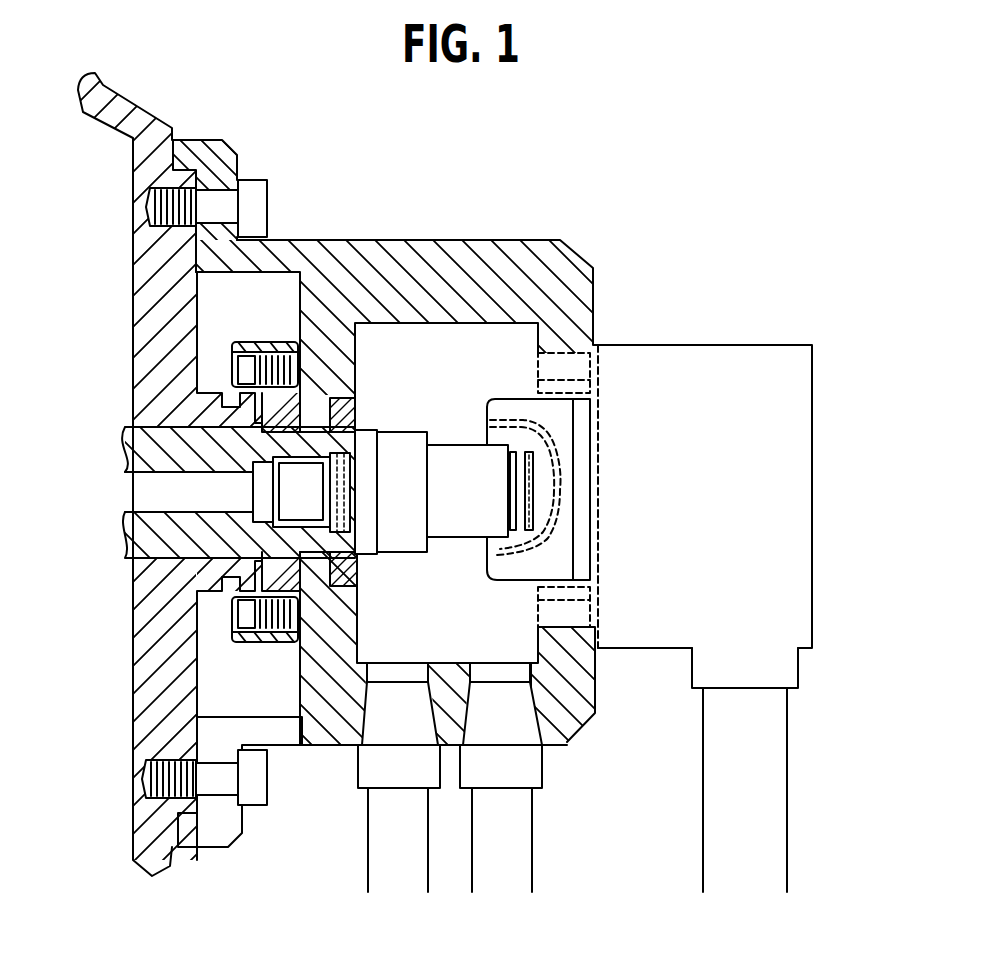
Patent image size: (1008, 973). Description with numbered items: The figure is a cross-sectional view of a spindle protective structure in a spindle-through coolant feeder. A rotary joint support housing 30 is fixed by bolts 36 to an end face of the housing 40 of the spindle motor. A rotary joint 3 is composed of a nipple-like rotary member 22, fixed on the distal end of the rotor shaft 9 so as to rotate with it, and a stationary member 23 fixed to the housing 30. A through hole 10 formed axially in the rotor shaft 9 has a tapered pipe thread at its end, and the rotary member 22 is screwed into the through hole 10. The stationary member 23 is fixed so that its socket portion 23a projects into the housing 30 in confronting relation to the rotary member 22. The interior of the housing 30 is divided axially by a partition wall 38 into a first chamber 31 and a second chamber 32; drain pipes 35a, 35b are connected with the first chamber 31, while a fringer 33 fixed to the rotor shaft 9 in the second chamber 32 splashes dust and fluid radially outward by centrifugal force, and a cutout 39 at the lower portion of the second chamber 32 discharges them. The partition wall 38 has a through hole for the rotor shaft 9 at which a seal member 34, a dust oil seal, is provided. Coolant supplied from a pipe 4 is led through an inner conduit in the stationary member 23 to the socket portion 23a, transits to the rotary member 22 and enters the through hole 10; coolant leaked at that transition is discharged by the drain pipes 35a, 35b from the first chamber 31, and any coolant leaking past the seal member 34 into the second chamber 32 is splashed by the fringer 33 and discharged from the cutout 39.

The rotary joint 3 is at (831, 383).
The pipe 4 is at (797, 812).
The rotor shaft 9 is at (140, 456).
The through hole 10 is at (133, 502).
The rotary member 22 is at (460, 430).
The stationary member 23 is at (806, 603).
The socket portion 23a is at (516, 588).
The rotary joint support housing 30 is at (517, 240).
The first chamber 31 is at (430, 347).
The second chamber 32 is at (240, 287).
The fringer 33 is at (272, 340).
The seal member 34 is at (340, 357).
The drain pipe 35a is at (368, 862).
The drain pipe 35b is at (532, 862).
The bolts 36 is at (260, 845).
The partition wall 38 is at (333, 667).
The cutout 39 is at (213, 733).
The housing 40 is at (150, 300).